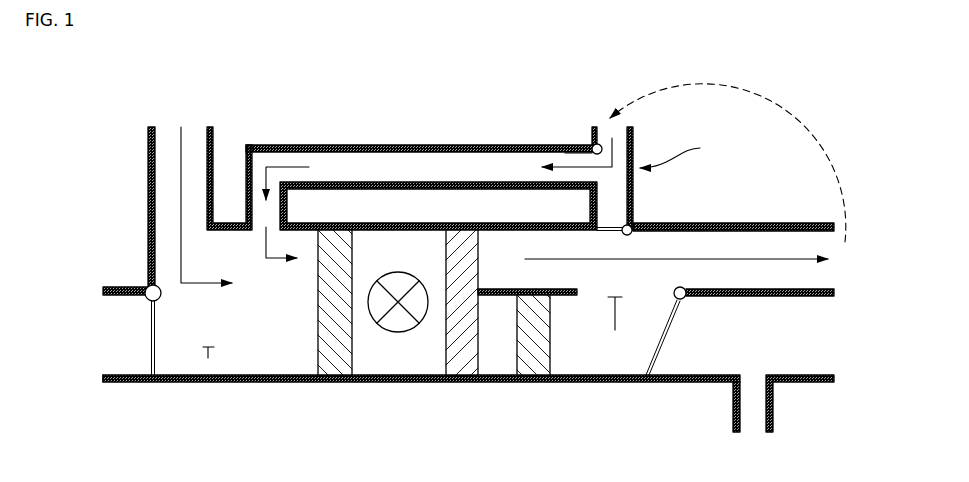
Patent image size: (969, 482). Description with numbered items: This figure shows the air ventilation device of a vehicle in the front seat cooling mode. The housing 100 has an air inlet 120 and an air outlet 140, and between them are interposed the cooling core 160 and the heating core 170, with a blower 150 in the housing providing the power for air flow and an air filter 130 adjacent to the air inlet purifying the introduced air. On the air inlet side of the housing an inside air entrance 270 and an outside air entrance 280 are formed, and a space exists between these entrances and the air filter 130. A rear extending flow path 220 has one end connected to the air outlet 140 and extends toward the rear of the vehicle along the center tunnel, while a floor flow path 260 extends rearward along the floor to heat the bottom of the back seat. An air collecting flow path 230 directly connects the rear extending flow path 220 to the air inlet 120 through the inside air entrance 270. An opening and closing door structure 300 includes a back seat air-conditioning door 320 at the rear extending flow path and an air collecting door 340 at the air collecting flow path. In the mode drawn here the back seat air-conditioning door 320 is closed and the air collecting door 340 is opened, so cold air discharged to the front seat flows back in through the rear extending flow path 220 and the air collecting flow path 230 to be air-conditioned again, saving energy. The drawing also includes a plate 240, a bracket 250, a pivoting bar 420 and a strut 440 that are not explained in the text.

The housing 100 is at (264, 383).
The air inlet 120 is at (208, 358).
The air filter 130 is at (336, 370).
The air outlet 140 is at (615, 330).
The blower 150 is at (398, 323).
The cooling core 160 is at (466, 363).
The heating core 170 is at (537, 363).
The rear extending flow path 220 is at (633, 137).
The air collecting flow path 230 is at (428, 145).
The extension plate 240 is at (778, 223).
The right bracket 250 is at (806, 383).
The floor flow path 260 is at (733, 418).
The inside air entrance 270 is at (148, 193).
The outside air entrance 280 is at (112, 383).
The opening and closing door structure 300 is at (689, 154).
The back seat air-conditioning door 320 is at (608, 226).
The air collecting door 340 is at (578, 145).
The pivoting bar 420 is at (150, 328).
The support strut 440 is at (668, 330).